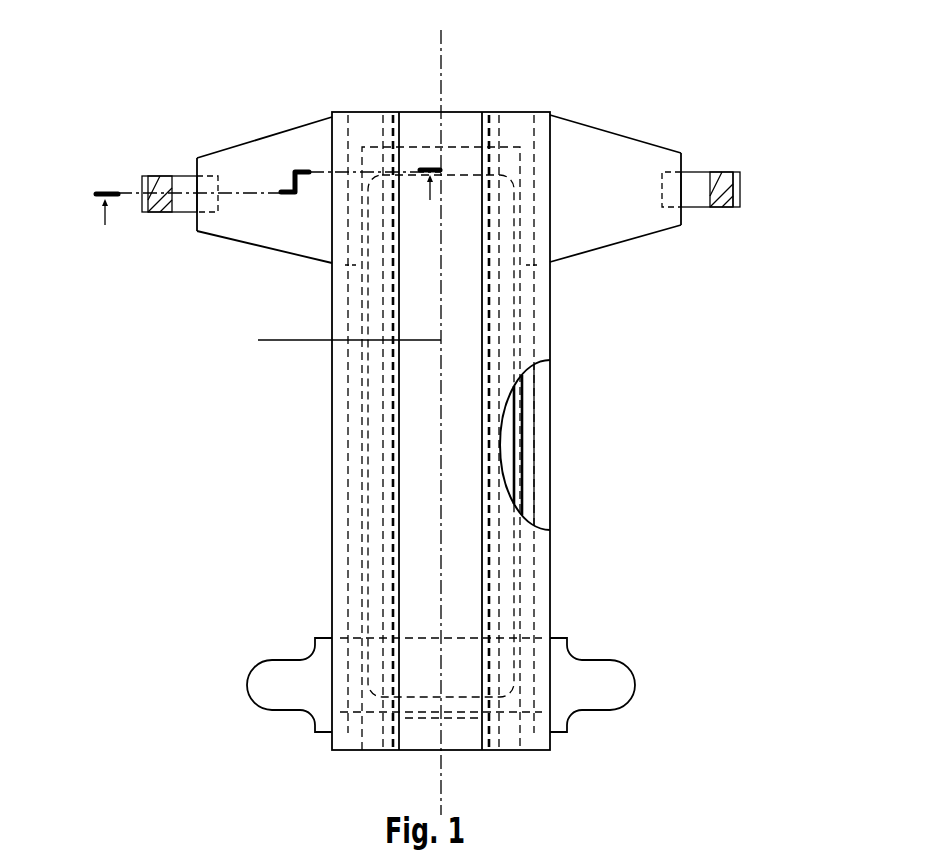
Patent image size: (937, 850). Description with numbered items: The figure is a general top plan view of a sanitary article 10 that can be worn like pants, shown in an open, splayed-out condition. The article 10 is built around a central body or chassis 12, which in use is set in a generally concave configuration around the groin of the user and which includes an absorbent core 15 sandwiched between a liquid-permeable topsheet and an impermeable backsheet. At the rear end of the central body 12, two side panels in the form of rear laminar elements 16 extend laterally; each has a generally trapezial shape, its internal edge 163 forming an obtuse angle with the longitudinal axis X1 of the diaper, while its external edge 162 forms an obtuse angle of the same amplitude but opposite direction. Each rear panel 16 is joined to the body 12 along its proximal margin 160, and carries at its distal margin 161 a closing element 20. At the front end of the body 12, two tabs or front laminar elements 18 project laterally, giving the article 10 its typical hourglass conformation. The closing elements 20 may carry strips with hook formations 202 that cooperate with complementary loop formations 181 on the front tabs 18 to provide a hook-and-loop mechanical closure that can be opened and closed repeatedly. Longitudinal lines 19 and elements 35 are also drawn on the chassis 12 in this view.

The article 10 is at (431, 419).
The central body 12 is at (348, 431).
The absorbent core 15 is at (572, 445).
The rear laminar element 16 is at (434, 194).
The front laminar element 18 is at (479, 658).
The longitudinal side region 19 is at (499, 421).
The closing element 20 is at (410, 141).
The elastic member 35 is at (443, 432).
The proximal margin 160 is at (512, 368).
The distal margin 161 is at (434, 225).
The external edge 162 is at (444, 86).
The internal edge 163 is at (420, 299).
The loop formations 181 is at (392, 728).
The hook formations 202 is at (385, 176).
The longitudinal axis X1 is at (334, 342).